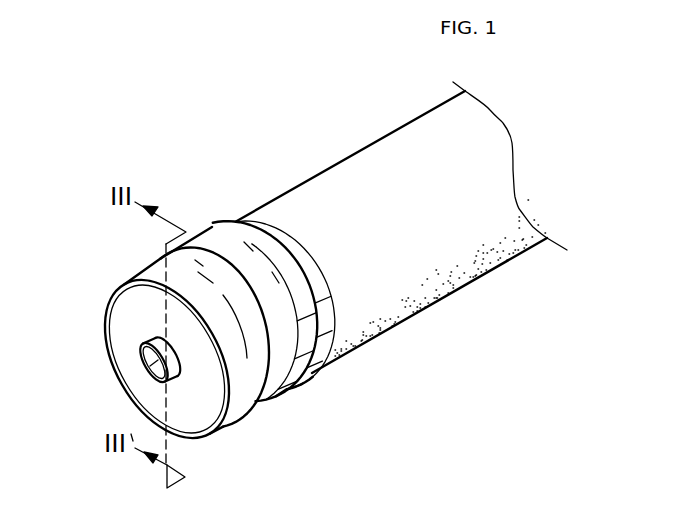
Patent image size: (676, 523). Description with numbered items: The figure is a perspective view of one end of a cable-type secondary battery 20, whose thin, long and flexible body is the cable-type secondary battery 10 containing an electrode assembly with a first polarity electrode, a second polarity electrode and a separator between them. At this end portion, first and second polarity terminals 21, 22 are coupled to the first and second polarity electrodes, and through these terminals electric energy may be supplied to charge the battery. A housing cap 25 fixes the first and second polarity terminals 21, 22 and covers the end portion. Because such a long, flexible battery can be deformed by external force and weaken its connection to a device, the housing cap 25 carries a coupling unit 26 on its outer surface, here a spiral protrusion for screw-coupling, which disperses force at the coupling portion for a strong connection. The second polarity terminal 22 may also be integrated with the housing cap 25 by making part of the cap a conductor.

The cable-type secondary battery 10 is at (303, 190).
The cable-type secondary battery 20 is at (319, 126).
The first polarity terminal 21 is at (142, 372).
The second polarity terminal 22 is at (212, 244).
The housing cap 25 is at (121, 316).
The coupling unit 26 is at (258, 402).